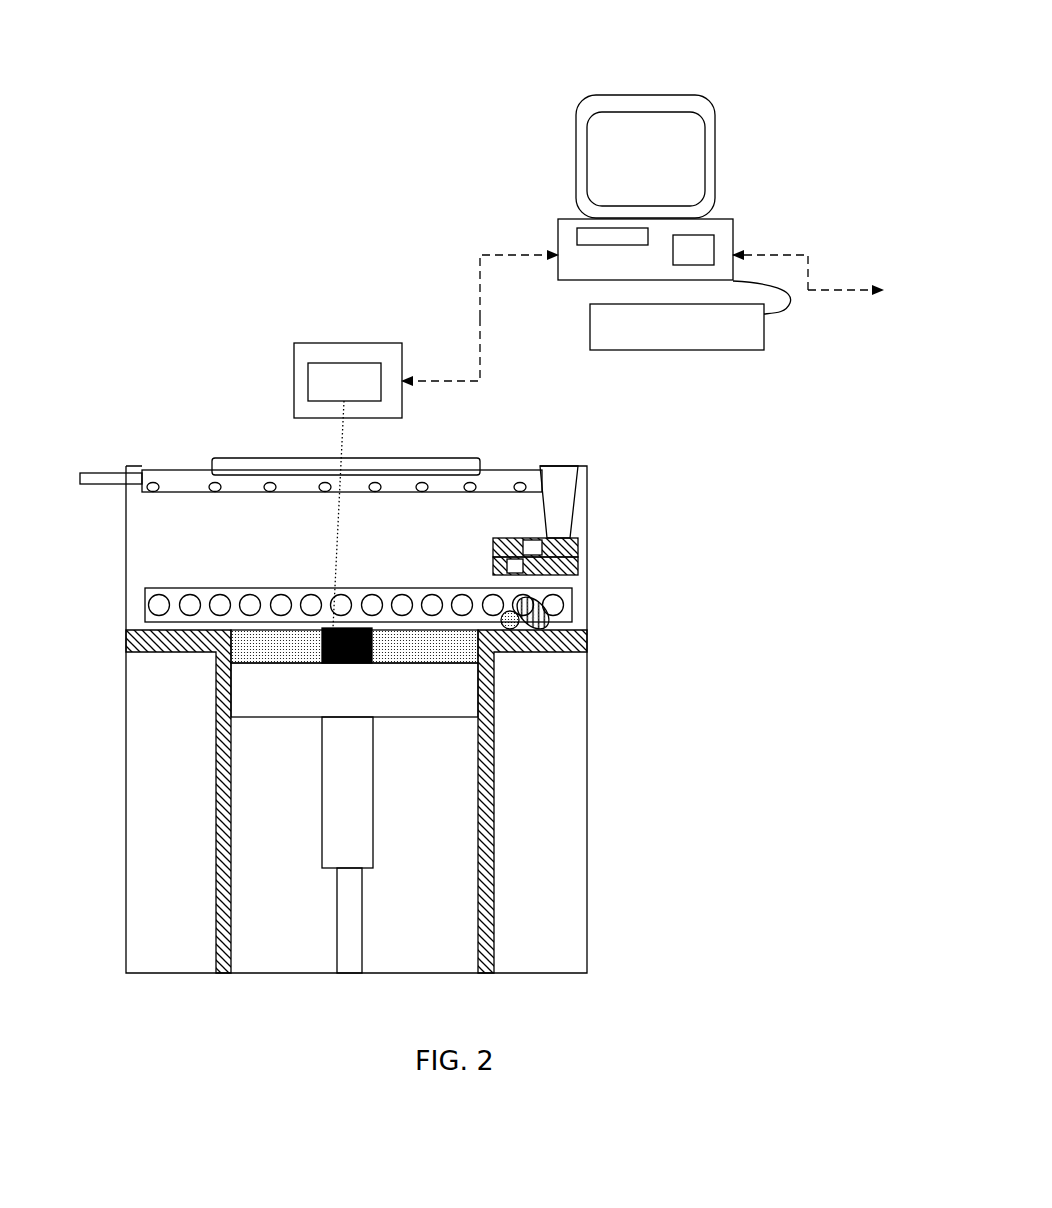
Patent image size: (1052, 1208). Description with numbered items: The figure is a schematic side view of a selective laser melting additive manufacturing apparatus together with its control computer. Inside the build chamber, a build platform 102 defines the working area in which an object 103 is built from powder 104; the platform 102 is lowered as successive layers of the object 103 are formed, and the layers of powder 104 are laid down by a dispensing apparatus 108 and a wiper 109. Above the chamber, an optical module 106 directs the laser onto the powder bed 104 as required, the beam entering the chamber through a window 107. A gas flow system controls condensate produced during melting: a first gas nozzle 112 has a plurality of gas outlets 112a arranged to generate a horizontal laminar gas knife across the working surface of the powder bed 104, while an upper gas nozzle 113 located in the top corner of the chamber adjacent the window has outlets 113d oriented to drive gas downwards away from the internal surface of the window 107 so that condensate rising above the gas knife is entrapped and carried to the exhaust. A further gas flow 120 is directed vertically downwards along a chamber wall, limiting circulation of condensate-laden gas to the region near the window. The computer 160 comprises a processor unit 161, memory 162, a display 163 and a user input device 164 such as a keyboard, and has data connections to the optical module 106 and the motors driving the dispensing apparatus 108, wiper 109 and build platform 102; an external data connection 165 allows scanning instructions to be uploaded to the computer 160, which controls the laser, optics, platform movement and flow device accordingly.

The build platform 102 is at (447, 688).
The object 103 is at (372, 667).
The powder 104 is at (270, 647).
The optical module 106 is at (288, 385).
The window 107 is at (335, 453).
The dispensing apparatus 108 is at (577, 568).
The wiper 109 is at (552, 610).
The first gas nozzle 112 is at (447, 597).
The gas outlets 112a is at (212, 602).
The upper gas nozzle 113 is at (502, 478).
The outlets 113d is at (207, 480).
The gas flow 120 is at (145, 608).
The computer 160 is at (565, 126).
The processor unit 161 is at (700, 242).
The memory 162 is at (578, 230).
The display 163 is at (670, 92).
The user input device 164 is at (672, 355).
The external data connection 165 is at (845, 293).